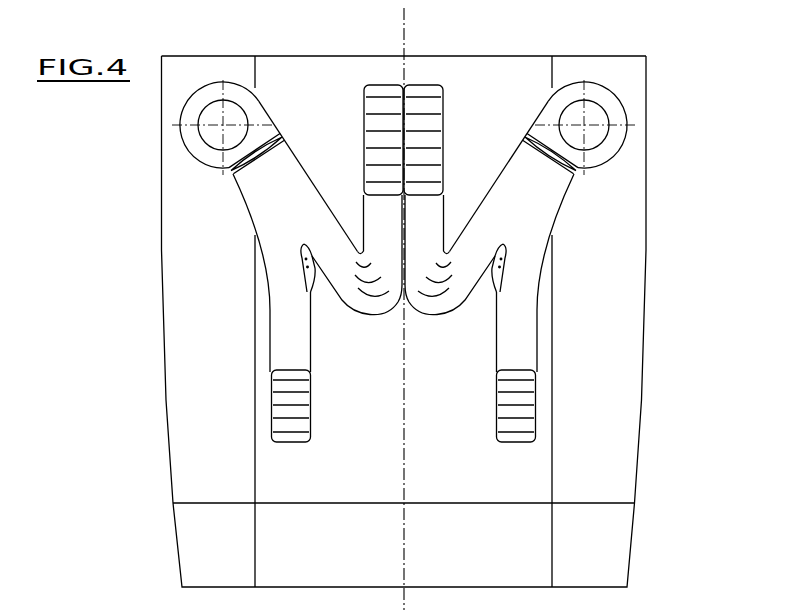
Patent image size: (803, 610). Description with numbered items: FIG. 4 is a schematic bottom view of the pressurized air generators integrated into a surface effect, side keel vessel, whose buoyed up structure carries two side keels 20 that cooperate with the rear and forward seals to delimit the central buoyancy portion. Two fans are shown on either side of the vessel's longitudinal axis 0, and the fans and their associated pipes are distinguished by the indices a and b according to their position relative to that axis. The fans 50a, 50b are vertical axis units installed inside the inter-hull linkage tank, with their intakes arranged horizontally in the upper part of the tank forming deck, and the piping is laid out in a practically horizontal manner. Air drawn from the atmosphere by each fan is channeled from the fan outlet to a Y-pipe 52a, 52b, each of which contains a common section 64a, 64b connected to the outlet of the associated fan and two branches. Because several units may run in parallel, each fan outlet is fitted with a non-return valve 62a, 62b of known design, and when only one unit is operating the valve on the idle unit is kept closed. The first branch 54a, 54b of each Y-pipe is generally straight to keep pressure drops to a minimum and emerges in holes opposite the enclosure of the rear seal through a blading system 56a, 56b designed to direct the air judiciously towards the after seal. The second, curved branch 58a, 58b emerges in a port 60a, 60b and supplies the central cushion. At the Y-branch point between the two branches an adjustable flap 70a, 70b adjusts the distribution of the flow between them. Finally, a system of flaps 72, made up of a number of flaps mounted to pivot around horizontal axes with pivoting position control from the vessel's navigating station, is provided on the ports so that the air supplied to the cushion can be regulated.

The longitudinal axis 0 is at (404, 23).
The side keel 20 is at (188, 454).
The fan 50a is at (218, 87).
The fan 50b is at (598, 95).
The Y-pipe 52a is at (255, 292).
The Y-pipe 52b is at (555, 266).
The first branch 54a is at (268, 354).
The first branch 54b is at (525, 348).
The blading system 56a is at (290, 434).
The blading system 56b is at (506, 412).
The second curved branch 58a is at (357, 212).
The second curved branch 58b is at (418, 272).
The port 60a is at (380, 98).
The port 60b is at (425, 100).
The non-return valve 62a is at (225, 168).
The non-return valve 62b is at (582, 168).
The common section 64a is at (296, 152).
The common section 64b is at (503, 186).
The adjustable flap 70a is at (314, 292).
The adjustable flap 70b is at (496, 302).
The system of flaps 72 is at (425, 120).